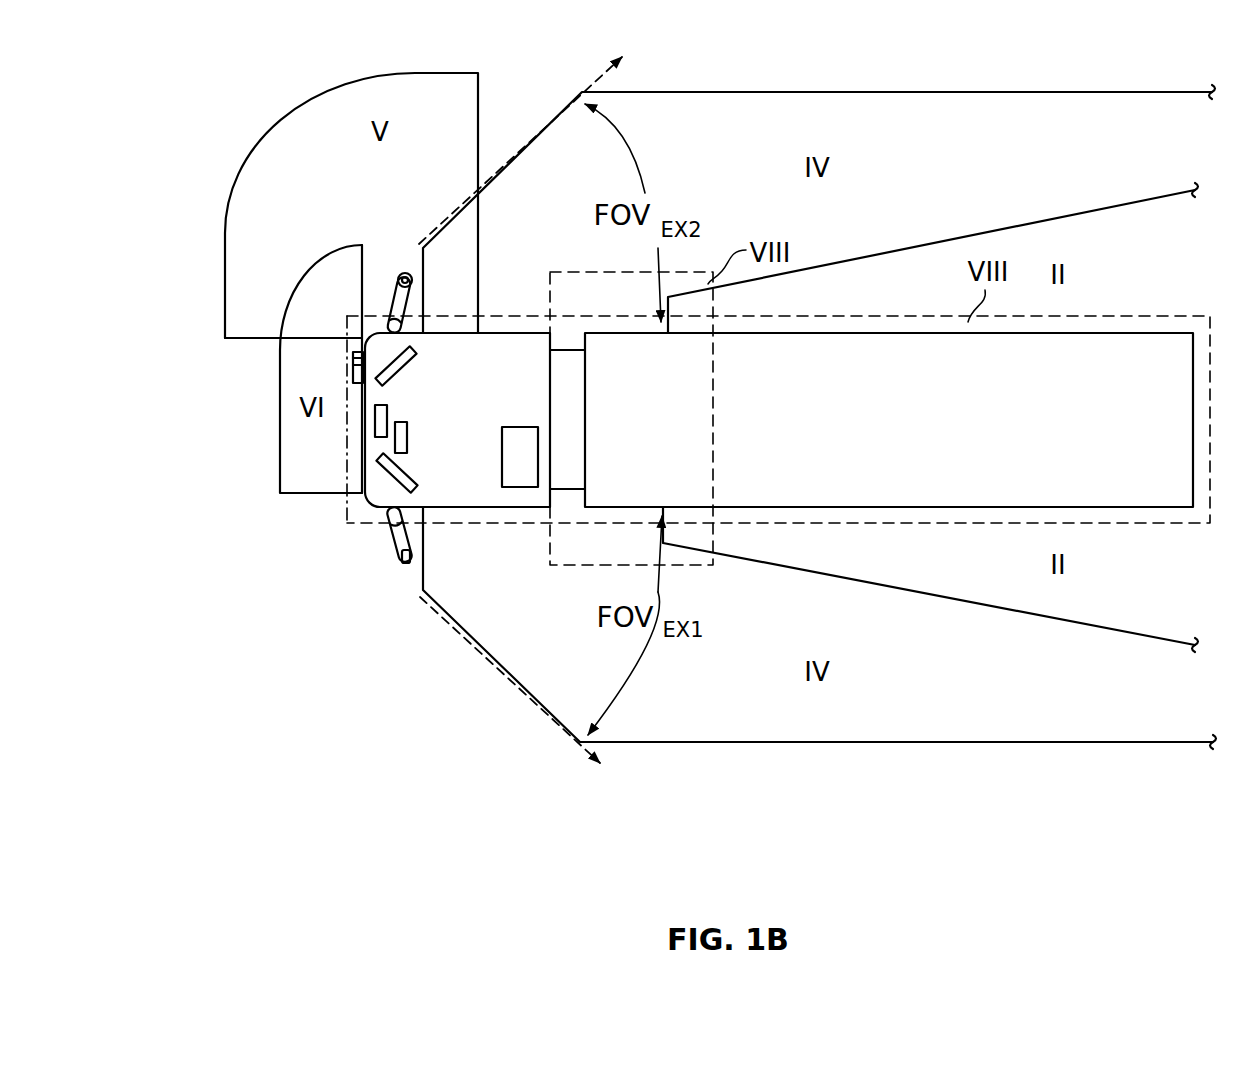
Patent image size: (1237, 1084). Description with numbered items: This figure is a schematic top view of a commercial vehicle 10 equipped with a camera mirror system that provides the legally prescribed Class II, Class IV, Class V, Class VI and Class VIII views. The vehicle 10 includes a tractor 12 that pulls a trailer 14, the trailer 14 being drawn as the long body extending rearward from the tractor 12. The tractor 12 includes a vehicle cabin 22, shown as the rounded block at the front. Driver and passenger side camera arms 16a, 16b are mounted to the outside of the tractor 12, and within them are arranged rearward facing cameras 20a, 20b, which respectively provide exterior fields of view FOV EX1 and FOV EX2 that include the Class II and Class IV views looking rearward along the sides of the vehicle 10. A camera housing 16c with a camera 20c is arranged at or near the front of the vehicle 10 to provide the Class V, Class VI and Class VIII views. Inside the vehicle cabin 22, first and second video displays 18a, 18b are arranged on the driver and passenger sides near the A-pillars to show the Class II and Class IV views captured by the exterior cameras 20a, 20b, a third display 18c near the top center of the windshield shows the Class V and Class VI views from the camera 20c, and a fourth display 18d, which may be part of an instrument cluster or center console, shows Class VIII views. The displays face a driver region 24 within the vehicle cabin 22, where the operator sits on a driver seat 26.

The commercial vehicle 10 is at (348, 312).
The tractor 12 is at (360, 508).
The trailer 14 is at (1140, 316).
The driver side camera arm 16a is at (392, 548).
The passenger side camera arm 16b is at (397, 286).
The camera housing 16c is at (353, 371).
The first video display 18a is at (412, 480).
The second video display 18b is at (405, 372).
The third display 18c is at (375, 420).
The fourth display 18d is at (395, 448).
The rearward facing camera 20a is at (410, 557).
The rearward facing camera 20b is at (412, 282).
The camera 20c is at (353, 355).
The vehicle cabin 22 is at (494, 345).
The driver region 24 is at (494, 449).
The driver seat 26 is at (525, 433).